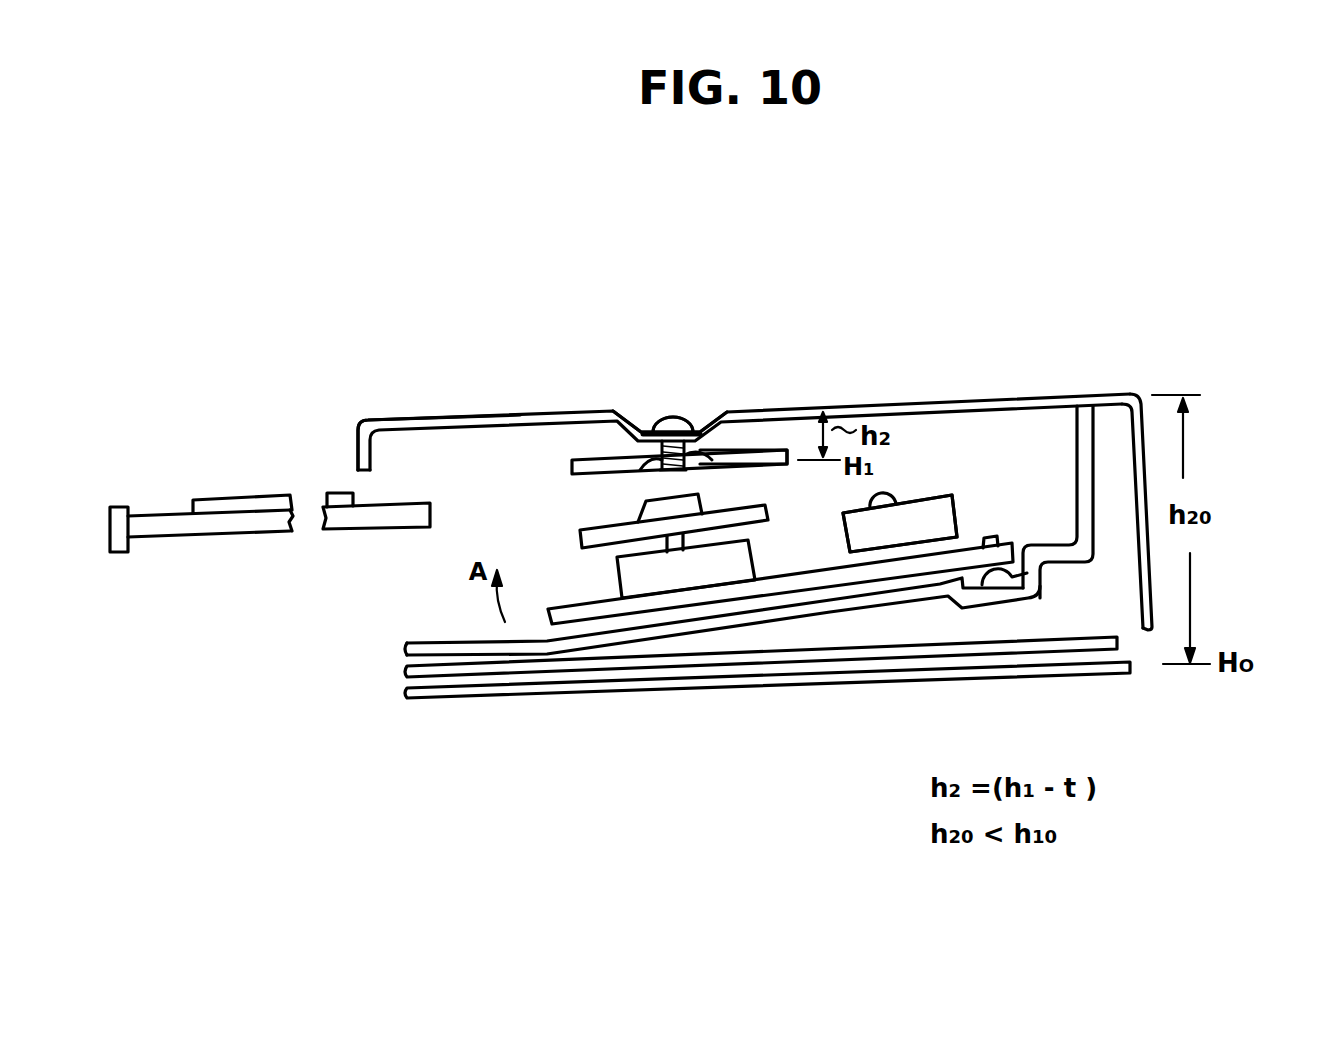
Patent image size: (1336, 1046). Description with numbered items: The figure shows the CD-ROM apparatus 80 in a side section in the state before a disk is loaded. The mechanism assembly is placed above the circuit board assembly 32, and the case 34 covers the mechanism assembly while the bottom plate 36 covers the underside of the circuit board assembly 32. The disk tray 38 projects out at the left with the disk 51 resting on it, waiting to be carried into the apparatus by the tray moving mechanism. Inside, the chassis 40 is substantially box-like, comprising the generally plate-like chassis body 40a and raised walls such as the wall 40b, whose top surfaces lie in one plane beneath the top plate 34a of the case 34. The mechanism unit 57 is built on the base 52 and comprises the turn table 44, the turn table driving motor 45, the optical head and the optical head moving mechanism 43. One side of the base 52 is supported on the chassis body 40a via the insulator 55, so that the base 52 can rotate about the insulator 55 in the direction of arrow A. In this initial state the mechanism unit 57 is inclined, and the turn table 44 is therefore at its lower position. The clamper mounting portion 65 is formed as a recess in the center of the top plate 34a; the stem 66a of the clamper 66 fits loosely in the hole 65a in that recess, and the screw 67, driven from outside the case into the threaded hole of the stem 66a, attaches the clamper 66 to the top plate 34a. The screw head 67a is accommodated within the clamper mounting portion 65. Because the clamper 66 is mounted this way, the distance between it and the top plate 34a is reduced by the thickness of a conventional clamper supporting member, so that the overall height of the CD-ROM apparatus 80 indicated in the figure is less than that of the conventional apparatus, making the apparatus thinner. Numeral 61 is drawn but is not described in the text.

The CD-ROM apparatus 80 is at (920, 218).
The circuit board assembly 32 is at (1108, 640).
The case 34 is at (1078, 390).
The top plate 34a is at (520, 418).
The bottom plate 36 is at (1040, 676).
The disk tray 38 is at (243, 530).
The chassis 40 is at (1148, 394).
The chassis body 40a is at (742, 613).
The wall 40b is at (1086, 458).
The optical head moving mechanism 43 is at (957, 522).
The turn table 44 is at (575, 528).
The turn table driving motor 45 is at (612, 578).
The disk 51 is at (242, 497).
The base 52 is at (808, 580).
The insulator 55 is at (1027, 573).
The mechanism unit 57 is at (920, 482).
The mounting bar 61 is at (770, 448).
The clamper mounting portion 65 is at (712, 428).
The hole 65a is at (646, 462).
The clamper 66 is at (590, 460).
The stem 66a is at (705, 450).
The screw 67 is at (657, 408).
The screw head 67a is at (693, 410).